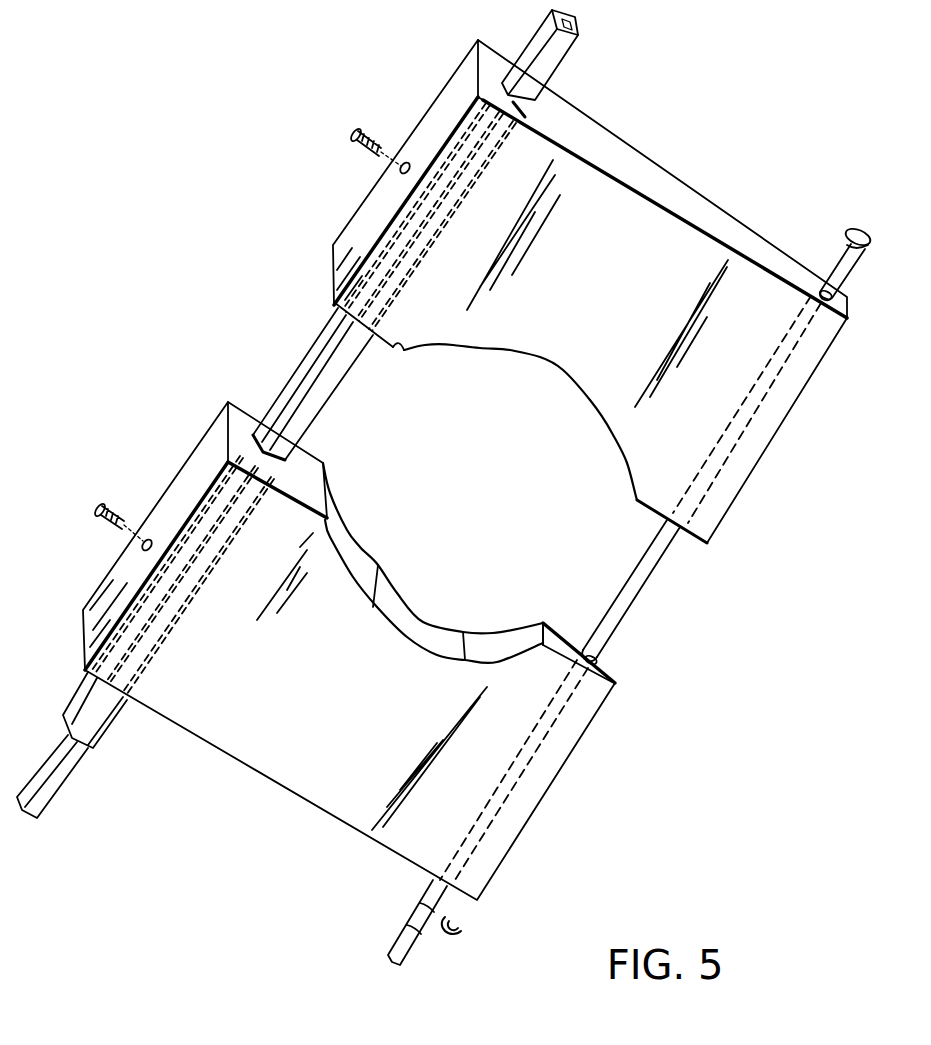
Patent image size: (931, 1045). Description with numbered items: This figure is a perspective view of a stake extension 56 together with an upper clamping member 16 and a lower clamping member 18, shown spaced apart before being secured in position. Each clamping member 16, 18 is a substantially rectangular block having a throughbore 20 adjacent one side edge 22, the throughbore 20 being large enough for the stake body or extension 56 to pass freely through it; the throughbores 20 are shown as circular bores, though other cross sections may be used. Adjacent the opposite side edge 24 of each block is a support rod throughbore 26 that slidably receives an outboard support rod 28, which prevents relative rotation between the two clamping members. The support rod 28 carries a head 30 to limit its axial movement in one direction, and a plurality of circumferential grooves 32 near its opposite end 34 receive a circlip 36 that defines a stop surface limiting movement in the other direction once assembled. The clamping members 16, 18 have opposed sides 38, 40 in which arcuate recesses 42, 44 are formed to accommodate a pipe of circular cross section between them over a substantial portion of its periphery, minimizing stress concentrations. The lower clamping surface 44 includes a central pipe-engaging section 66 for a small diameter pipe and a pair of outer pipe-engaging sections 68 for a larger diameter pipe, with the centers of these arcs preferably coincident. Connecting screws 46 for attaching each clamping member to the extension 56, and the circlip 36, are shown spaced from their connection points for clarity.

The upper clamping member 16 is at (660, 227).
The lower clamping member 18 is at (293, 782).
The throughbore 20 is at (520, 110).
The side edge 22 is at (447, 97).
The opposite side edge 24 is at (780, 427).
The support rod throughbore 26 is at (822, 290).
The outboard support rod 28 is at (639, 590).
The head 30 is at (853, 230).
The circumferential grooves 32 is at (426, 902).
The opposite end 34 is at (391, 967).
The circlip 36 is at (464, 932).
The opposed side 38 is at (393, 349).
The opposed side 40 is at (323, 465).
The arcuate recess 42 is at (565, 372).
The arcuate recess 44 is at (398, 592).
The connecting screws 46 is at (345, 135).
The stake extension 56 is at (320, 360).
The central pipe-engaging section 66 is at (424, 622).
The outer pipe-engaging sections 68 is at (360, 549).